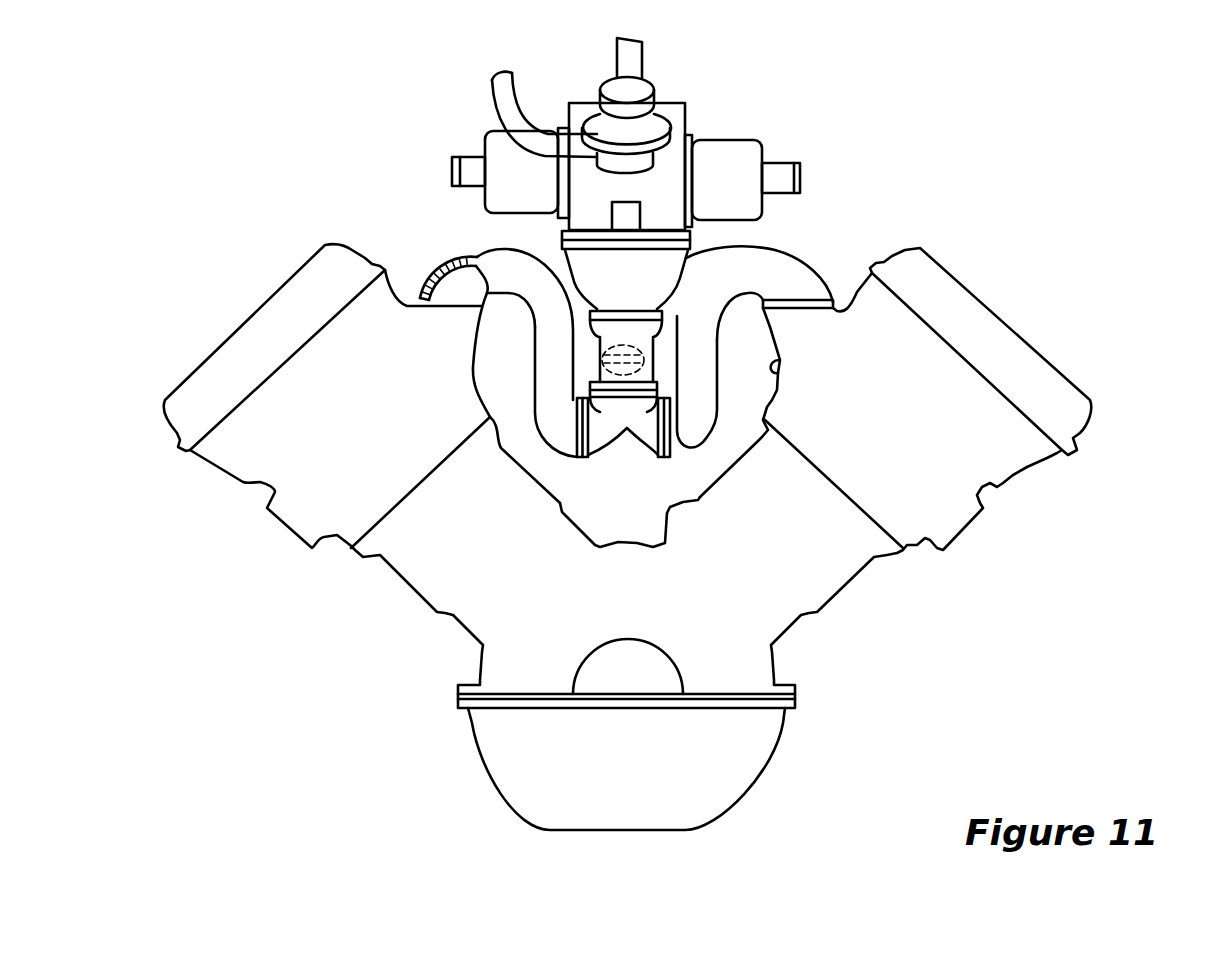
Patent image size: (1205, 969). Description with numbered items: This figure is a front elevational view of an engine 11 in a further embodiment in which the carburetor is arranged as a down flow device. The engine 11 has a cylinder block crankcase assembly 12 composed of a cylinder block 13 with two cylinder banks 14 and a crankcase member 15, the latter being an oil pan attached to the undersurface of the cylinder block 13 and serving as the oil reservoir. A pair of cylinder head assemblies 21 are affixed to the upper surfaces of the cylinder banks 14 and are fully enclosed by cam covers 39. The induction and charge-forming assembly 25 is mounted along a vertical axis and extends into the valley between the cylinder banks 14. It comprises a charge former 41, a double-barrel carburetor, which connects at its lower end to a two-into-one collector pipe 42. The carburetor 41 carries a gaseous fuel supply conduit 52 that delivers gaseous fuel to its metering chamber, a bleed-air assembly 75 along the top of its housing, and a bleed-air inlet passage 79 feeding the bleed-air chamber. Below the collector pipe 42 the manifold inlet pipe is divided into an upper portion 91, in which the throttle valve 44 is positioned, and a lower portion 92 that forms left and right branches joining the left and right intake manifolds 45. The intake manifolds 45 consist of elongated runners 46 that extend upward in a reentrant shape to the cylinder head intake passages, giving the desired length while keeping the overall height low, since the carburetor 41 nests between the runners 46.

The engine 11 is at (852, 117).
The cylinder block crankcase assembly 12 is at (786, 663).
The cylinder block 13 is at (623, 545).
The cylinder banks 14 is at (407, 585).
The crankcase member 15 is at (775, 752).
The cylinder head assemblies 21 is at (475, 360).
The induction and charge-forming assembly 25 is at (568, 49).
The cam covers 39 is at (280, 289).
The charge former 41 is at (717, 123).
The collector pipe 42 is at (703, 258).
The throttle valve 44 is at (600, 363).
The intake manifolds 45 is at (545, 483).
The runners 46 is at (437, 272).
The gaseous fuel supply conduit 52 is at (645, 56).
The bleed-air assembly 75 is at (640, 92).
The bleed-air inlet passage 79 is at (493, 100).
The upper portion of intake manifold inlet pipe 91 is at (600, 358).
The lower portion of intake manifold inlet pipe 92 is at (638, 452).